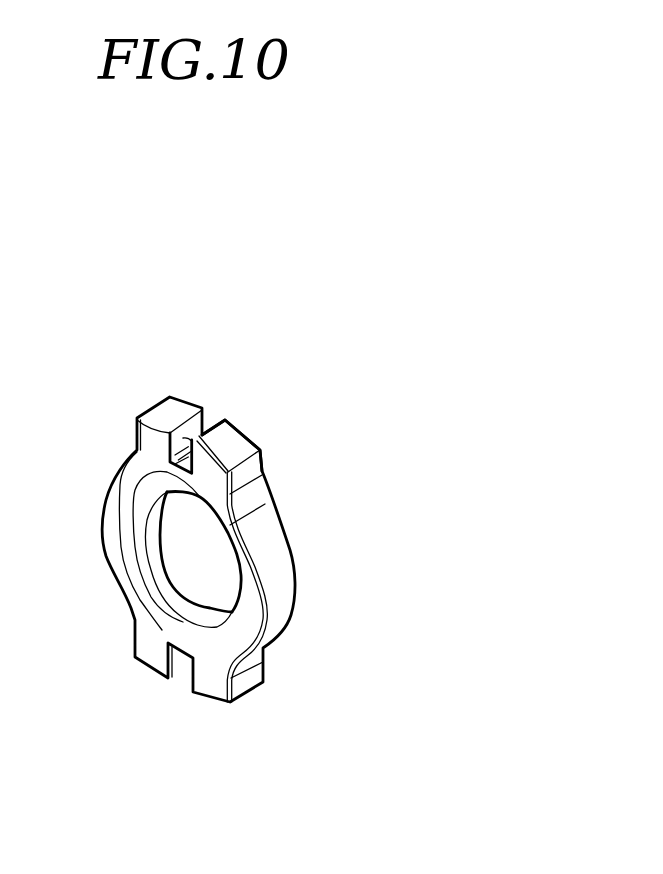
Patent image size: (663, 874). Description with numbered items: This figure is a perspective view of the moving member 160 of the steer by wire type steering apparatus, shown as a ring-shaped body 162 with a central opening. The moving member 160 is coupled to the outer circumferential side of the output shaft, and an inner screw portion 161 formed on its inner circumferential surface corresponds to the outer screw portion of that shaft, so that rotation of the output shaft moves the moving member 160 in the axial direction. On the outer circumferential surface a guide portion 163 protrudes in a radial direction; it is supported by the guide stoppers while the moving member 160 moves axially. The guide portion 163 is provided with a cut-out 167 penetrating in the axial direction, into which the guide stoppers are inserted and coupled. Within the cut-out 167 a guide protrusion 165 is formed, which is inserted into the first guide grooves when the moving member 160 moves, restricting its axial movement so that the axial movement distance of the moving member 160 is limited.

The moving member 160 is at (106, 352).
The inner screw portion 161 is at (158, 568).
The ring body 162 is at (280, 555).
The guide portion 163 is at (233, 442).
The guide protrusion 165 is at (170, 433).
The cut-out 167 is at (206, 418).